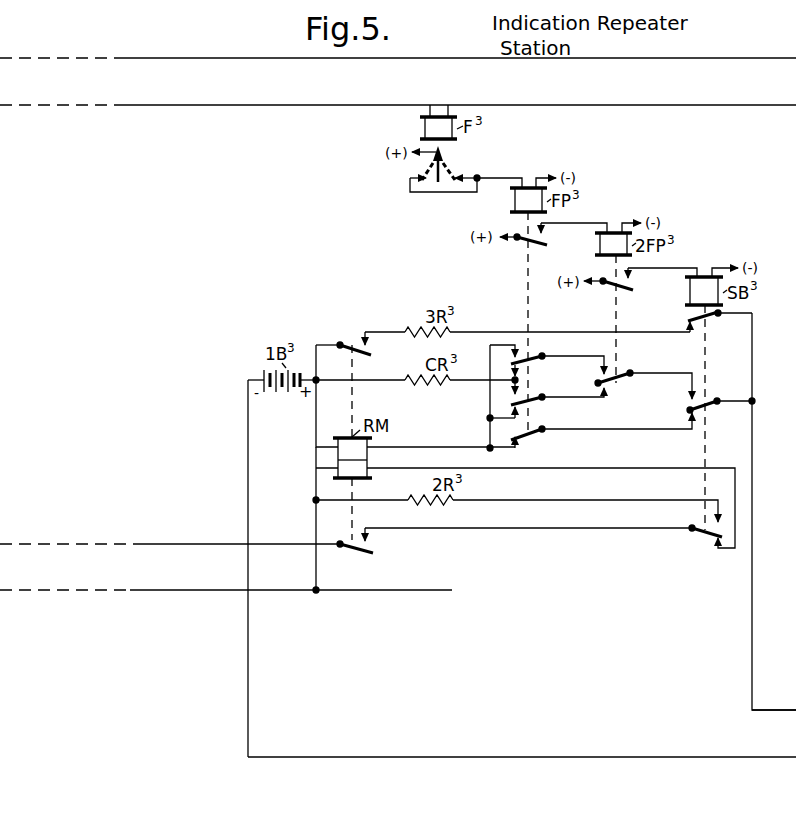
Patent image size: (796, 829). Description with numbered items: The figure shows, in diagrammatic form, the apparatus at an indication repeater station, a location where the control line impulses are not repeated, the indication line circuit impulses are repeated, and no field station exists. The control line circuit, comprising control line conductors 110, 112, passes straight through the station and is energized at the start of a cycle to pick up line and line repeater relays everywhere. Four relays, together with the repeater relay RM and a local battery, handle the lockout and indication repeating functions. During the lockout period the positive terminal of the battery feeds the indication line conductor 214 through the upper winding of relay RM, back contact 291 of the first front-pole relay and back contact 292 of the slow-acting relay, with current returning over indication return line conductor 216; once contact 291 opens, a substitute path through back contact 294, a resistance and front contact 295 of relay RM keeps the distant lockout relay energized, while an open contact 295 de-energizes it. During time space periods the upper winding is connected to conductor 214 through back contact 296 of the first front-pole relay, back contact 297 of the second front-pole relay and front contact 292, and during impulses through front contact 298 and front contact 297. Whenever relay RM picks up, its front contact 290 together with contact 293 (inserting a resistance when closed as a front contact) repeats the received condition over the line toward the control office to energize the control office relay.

The control line conductor 110 is at (398, 93).
The control line conductor 112 is at (398, 46).
The indication line conductor 214 is at (774, 699).
The indication return line conductor 216 is at (522, 745).
The front contact of relay RM 290 is at (345, 548).
The back contact of relay FP3 291 is at (532, 435).
The contact of relay SB3 292 is at (708, 405).
The contact of relay SB3 293 is at (700, 533).
The back contact of relay SB3 294 is at (706, 322).
The front contact of relay RM 295 is at (340, 348).
The back contact of relay FP3 296 is at (532, 401).
The contact of relay 2FP3 297 is at (620, 378).
The front contact of relay FP3 298 is at (532, 360).